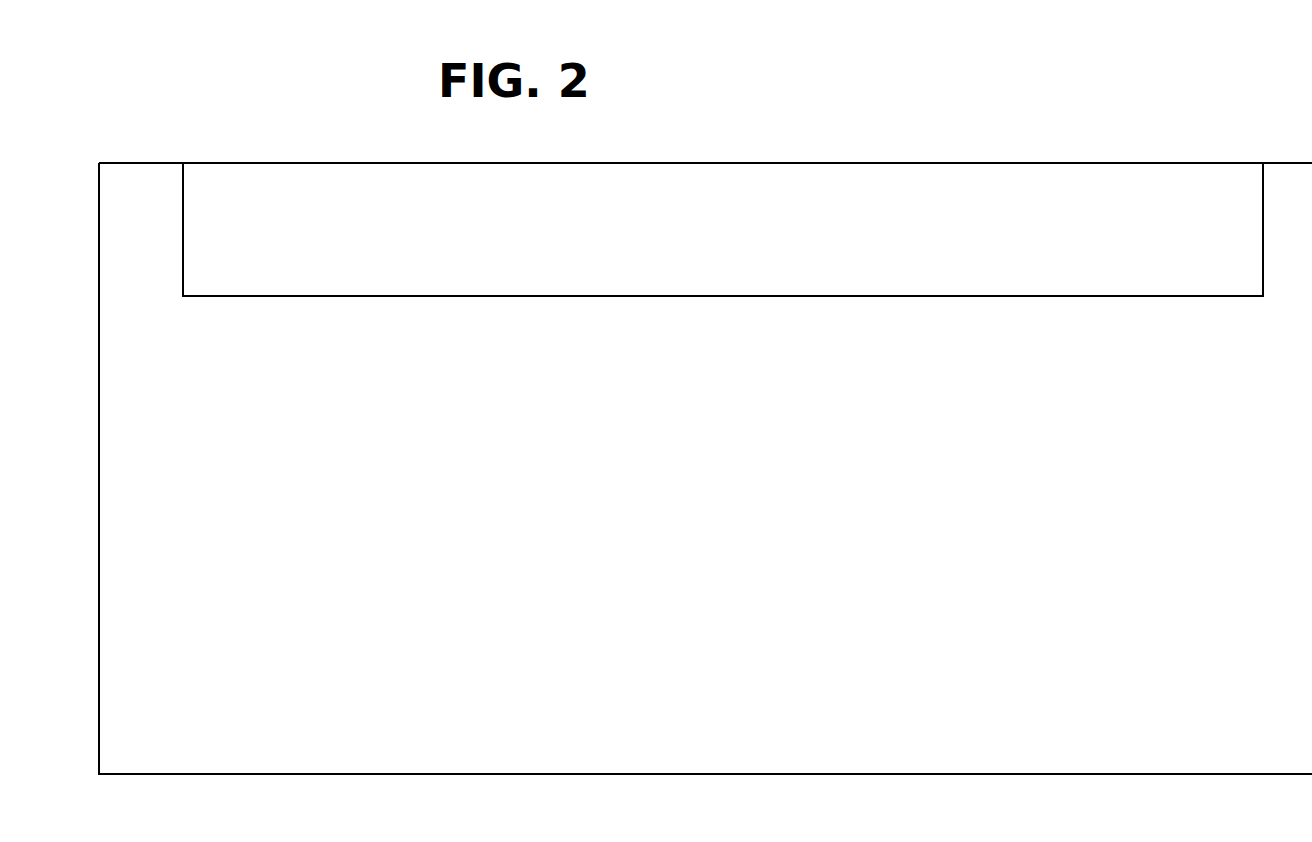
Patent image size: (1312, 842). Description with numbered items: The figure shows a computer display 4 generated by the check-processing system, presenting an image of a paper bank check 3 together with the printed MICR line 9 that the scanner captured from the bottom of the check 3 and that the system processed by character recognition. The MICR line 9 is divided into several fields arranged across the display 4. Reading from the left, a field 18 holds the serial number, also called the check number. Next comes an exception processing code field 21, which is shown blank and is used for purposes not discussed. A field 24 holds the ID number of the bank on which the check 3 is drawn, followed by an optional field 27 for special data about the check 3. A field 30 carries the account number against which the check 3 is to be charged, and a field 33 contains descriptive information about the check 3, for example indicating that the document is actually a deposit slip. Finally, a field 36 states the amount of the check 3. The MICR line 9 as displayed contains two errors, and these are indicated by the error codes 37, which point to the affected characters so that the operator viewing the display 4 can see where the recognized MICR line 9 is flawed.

The bank check 3 is at (183, 272).
The display 4 is at (228, 774).
The MICR line 9 is at (243, 248).
The serial number field 18 is at (393, 312).
The exception processing code field 21 is at (405, 292).
The bank ID number field 24 is at (612, 312).
The optional special data field 27 is at (710, 312).
The account number field 30 is at (910, 312).
The descriptive information field 33 is at (962, 312).
The amount field 36 is at (1185, 312).
The error codes 37 is at (713, 237).